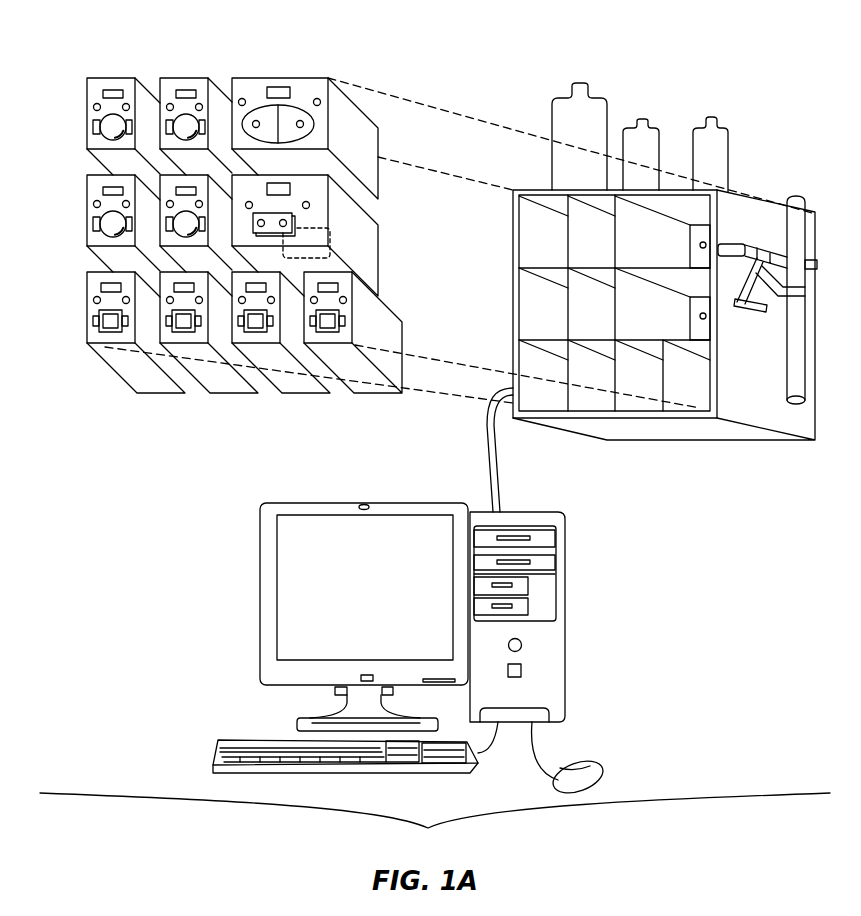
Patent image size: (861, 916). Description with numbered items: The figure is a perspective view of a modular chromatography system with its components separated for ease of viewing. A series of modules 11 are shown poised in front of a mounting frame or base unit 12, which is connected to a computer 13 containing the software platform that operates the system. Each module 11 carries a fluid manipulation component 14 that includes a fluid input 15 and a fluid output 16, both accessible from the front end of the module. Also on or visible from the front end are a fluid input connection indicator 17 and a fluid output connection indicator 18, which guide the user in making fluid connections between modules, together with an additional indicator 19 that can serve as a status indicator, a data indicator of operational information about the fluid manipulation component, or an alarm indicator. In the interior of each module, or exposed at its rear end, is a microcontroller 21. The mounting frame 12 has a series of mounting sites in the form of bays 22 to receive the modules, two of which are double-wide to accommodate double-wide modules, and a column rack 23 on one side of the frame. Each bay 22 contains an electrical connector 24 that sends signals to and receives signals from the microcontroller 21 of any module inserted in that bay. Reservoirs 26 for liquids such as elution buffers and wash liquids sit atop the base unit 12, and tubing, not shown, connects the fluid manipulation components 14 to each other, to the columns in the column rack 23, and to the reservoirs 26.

The module 11 is at (231, 255).
The mounting frame or base unit 12 is at (640, 246).
The computer 13 is at (566, 560).
The fluid manipulation component 14 is at (305, 117).
The fluid input 15 is at (98, 119).
The fluid output 16 is at (126, 136).
The fluid input connection indicator 17 is at (94, 104).
The fluid output connection indicator 18 is at (126, 104).
The additional indicator 19 is at (276, 86).
The microcontroller 21 is at (300, 220).
The bay 22 is at (530, 295).
The column rack 23 is at (757, 258).
The electrical connector 24 is at (705, 240).
The reservoirs 26 is at (733, 72).